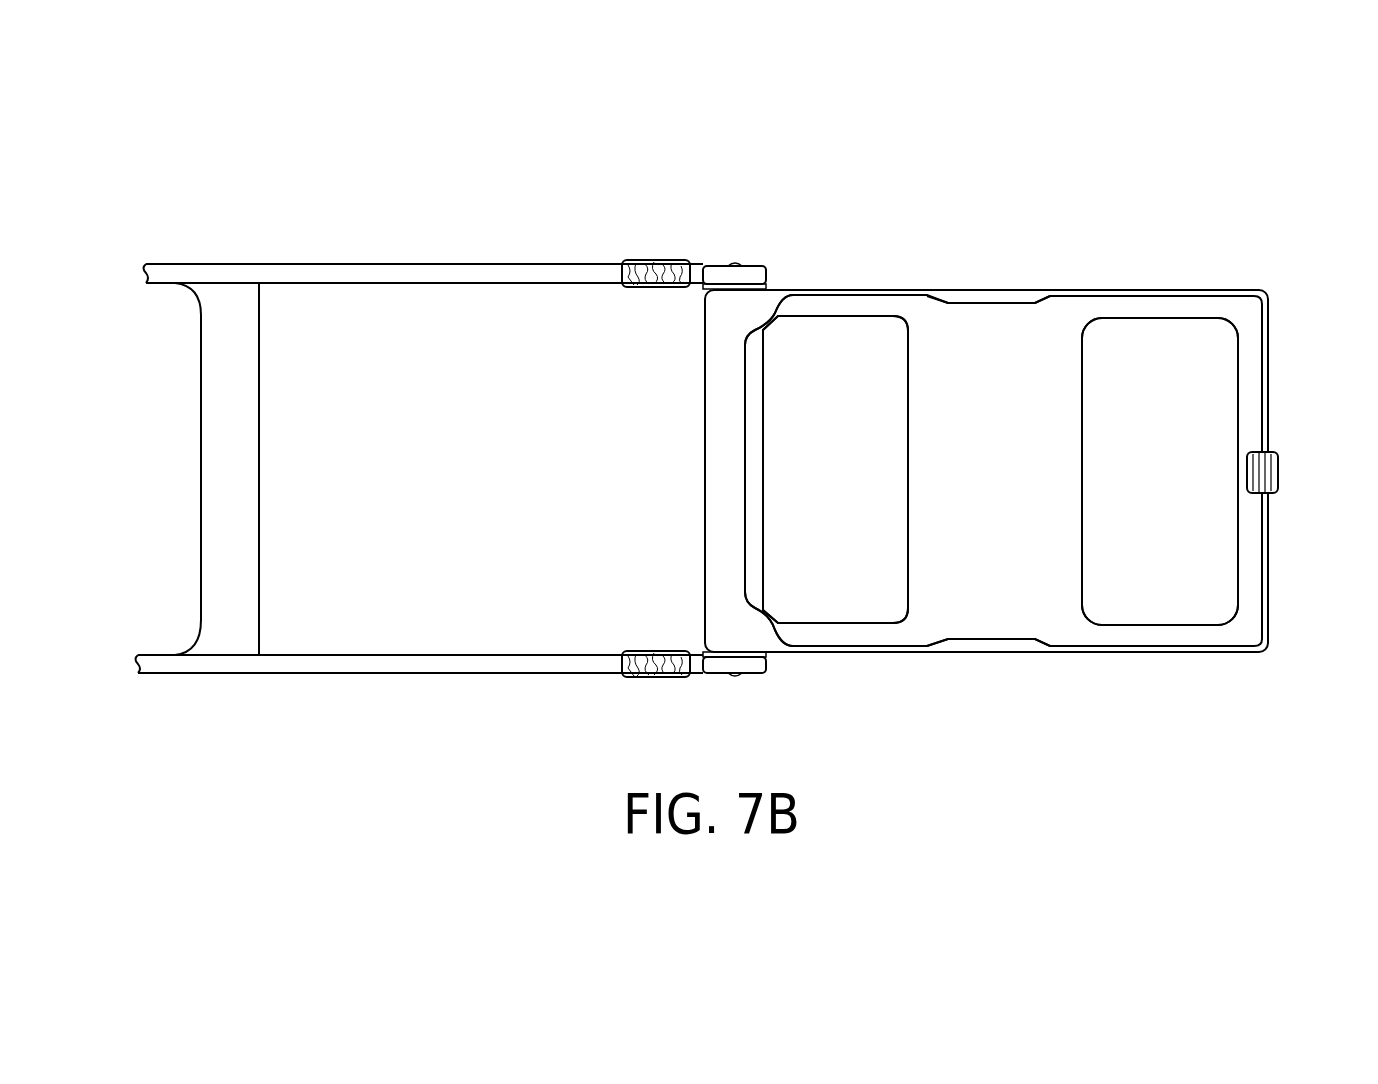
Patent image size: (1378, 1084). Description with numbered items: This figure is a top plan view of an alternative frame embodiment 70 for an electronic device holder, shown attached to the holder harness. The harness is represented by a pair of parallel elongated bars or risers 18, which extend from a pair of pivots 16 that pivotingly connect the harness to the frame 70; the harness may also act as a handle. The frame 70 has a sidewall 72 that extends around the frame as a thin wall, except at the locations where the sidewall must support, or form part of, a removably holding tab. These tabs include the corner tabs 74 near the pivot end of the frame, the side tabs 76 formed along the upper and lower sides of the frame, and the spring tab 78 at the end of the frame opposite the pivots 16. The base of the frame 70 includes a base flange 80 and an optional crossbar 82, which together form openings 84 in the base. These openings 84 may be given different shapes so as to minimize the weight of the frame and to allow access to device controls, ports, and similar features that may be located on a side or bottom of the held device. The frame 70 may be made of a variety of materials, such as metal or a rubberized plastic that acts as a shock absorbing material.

The pivot 16 is at (720, 277).
The riser 18 is at (483, 275).
The frame 70 is at (988, 459).
The sidewall 72 is at (1071, 292).
The corner tab 74 is at (750, 307).
The side tab 76 is at (987, 300).
The spring tab 78 is at (1283, 472).
The base flange 80 is at (1160, 306).
The crossbar 82 is at (930, 460).
The opening 84 is at (835, 352).